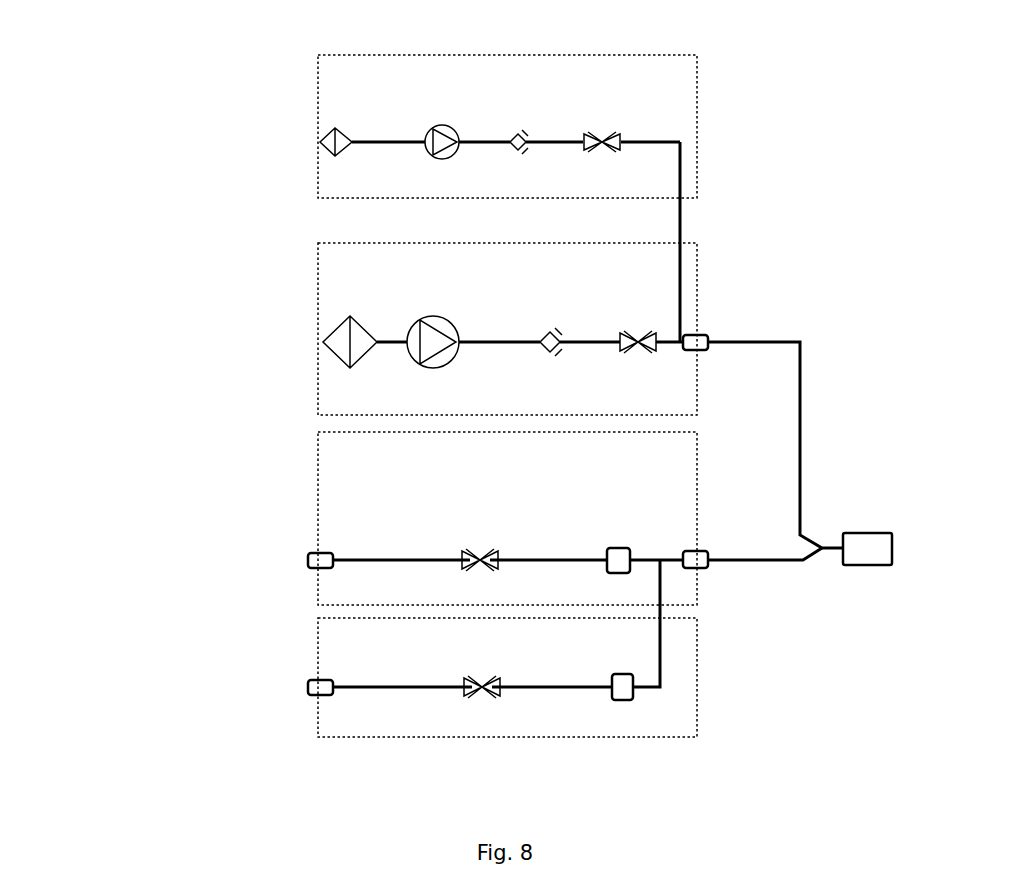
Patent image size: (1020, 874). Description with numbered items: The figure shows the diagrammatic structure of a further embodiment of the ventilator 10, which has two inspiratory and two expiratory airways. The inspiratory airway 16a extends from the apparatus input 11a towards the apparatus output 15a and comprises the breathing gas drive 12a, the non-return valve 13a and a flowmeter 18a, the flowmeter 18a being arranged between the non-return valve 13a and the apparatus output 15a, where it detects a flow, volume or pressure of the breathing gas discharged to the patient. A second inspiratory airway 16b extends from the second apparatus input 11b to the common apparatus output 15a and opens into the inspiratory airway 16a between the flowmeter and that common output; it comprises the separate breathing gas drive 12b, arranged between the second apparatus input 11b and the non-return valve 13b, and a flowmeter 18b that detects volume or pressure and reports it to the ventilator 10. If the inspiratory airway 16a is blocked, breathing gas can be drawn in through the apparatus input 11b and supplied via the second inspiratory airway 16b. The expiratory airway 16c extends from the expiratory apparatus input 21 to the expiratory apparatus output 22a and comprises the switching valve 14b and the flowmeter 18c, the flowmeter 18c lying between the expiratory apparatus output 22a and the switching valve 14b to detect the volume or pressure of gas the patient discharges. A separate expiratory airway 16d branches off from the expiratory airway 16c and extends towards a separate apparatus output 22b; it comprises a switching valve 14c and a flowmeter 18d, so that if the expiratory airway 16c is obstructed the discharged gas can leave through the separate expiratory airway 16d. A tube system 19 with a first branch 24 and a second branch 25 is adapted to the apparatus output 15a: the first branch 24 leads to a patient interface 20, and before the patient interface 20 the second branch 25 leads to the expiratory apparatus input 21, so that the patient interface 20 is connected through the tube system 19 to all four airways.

The ventilator 10 is at (180, 423).
The apparatus input 11a is at (324, 344).
The second apparatus input 11b is at (320, 142).
The breathing gas drive 12a is at (424, 360).
The separate breathing gas drive 12b is at (440, 126).
The non-return valve 13a is at (545, 338).
The non-return valve 13b is at (517, 130).
The switching valve 14b is at (632, 573).
The switching valve 14c is at (629, 700).
The apparatus output 15a is at (708, 338).
The inspiratory airway 16a is at (386, 334).
The second inspiratory airway 16b is at (684, 232).
The expiratory airway 16c is at (378, 556).
The separate expiratory airway 16d is at (670, 665).
The flowmeter 18a is at (643, 338).
The flowmeter 18b is at (602, 134).
The flowmeter 18c is at (478, 555).
The flowmeter 18d is at (481, 694).
The tube system 19 is at (807, 481).
The patient interface 20 is at (876, 533).
The expiratory apparatus input 21 is at (708, 568).
The expiratory apparatus output 22a is at (308, 560).
The separate apparatus output 22b is at (308, 688).
The first branch 24 is at (805, 447).
The second branch 25 is at (784, 563).